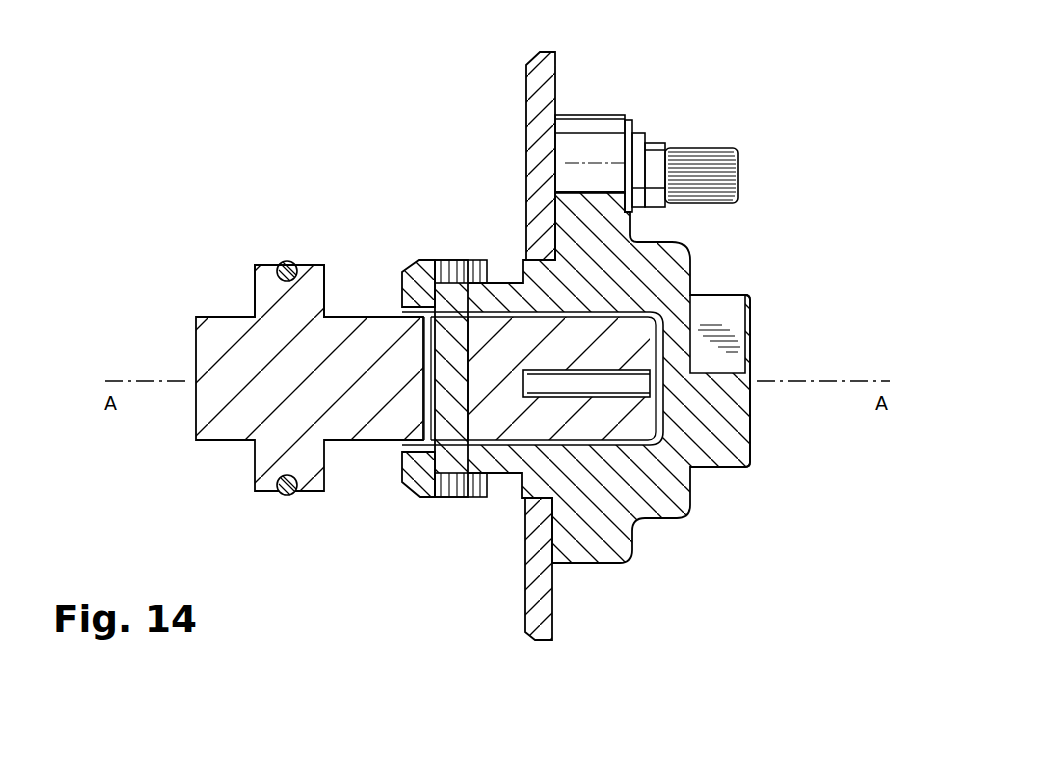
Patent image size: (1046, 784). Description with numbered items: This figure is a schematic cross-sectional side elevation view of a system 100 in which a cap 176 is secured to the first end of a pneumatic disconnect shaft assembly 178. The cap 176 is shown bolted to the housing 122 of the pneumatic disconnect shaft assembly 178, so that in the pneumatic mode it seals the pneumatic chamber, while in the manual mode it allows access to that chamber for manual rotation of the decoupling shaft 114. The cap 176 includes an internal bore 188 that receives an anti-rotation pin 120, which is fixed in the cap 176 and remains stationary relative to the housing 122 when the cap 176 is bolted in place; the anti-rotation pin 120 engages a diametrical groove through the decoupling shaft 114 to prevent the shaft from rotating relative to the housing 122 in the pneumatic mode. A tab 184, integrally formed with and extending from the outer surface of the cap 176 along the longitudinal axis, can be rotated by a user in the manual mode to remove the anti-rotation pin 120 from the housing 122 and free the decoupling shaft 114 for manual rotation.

The system 100 is at (845, 124).
The decoupling shaft 114 is at (370, 328).
The anti-rotation pin 120 is at (453, 462).
The housing 122 is at (553, 592).
The cap 176 is at (700, 497).
The pneumatic disconnect shaft assembly 178 is at (198, 264).
The tab 184 is at (732, 313).
The internal bore 188 is at (452, 268).